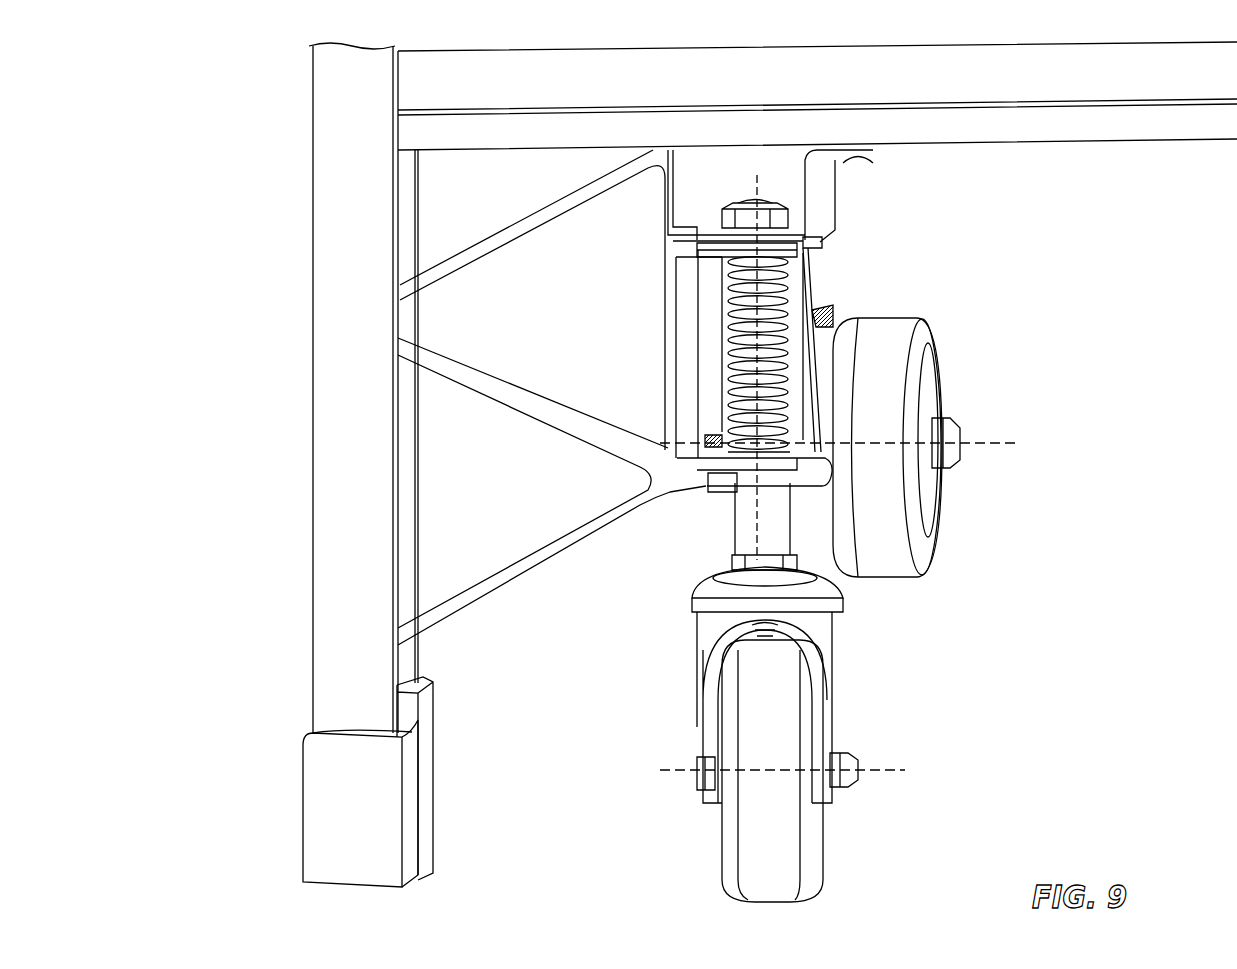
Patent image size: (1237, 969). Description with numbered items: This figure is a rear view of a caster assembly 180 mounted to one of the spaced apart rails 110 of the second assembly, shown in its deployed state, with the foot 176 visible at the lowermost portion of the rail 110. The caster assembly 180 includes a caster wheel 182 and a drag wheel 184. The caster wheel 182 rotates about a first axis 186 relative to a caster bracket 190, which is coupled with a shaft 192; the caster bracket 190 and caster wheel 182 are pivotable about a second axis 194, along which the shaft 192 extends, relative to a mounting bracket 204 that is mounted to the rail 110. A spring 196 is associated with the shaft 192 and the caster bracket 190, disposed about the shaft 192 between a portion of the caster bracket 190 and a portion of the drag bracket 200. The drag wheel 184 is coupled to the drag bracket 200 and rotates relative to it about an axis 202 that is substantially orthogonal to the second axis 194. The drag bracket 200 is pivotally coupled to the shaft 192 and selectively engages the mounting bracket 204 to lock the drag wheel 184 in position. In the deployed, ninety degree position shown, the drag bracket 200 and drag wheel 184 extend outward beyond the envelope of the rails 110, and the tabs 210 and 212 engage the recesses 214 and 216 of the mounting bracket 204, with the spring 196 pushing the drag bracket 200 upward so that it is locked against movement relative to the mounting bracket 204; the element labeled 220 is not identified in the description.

The rail 110 is at (325, 272).
The foot 176 is at (320, 808).
The caster assembly 180 is at (1107, 607).
The caster wheel 182 is at (823, 848).
The drag wheel 184 is at (942, 372).
The first axis 186 is at (888, 770).
The caster bracket 190 is at (827, 630).
The shaft 192 is at (812, 335).
The second axis 194 is at (755, 190).
The spring 196 is at (785, 372).
The drag bracket 200 is at (786, 300).
The axis 202 is at (1015, 443).
The mounting bracket 204 is at (522, 566).
The tab 210 is at (720, 258).
The tab 212 is at (717, 484).
The recess 214 is at (667, 224).
The recess 216 is at (702, 444).
The shaft 220 is at (747, 527).